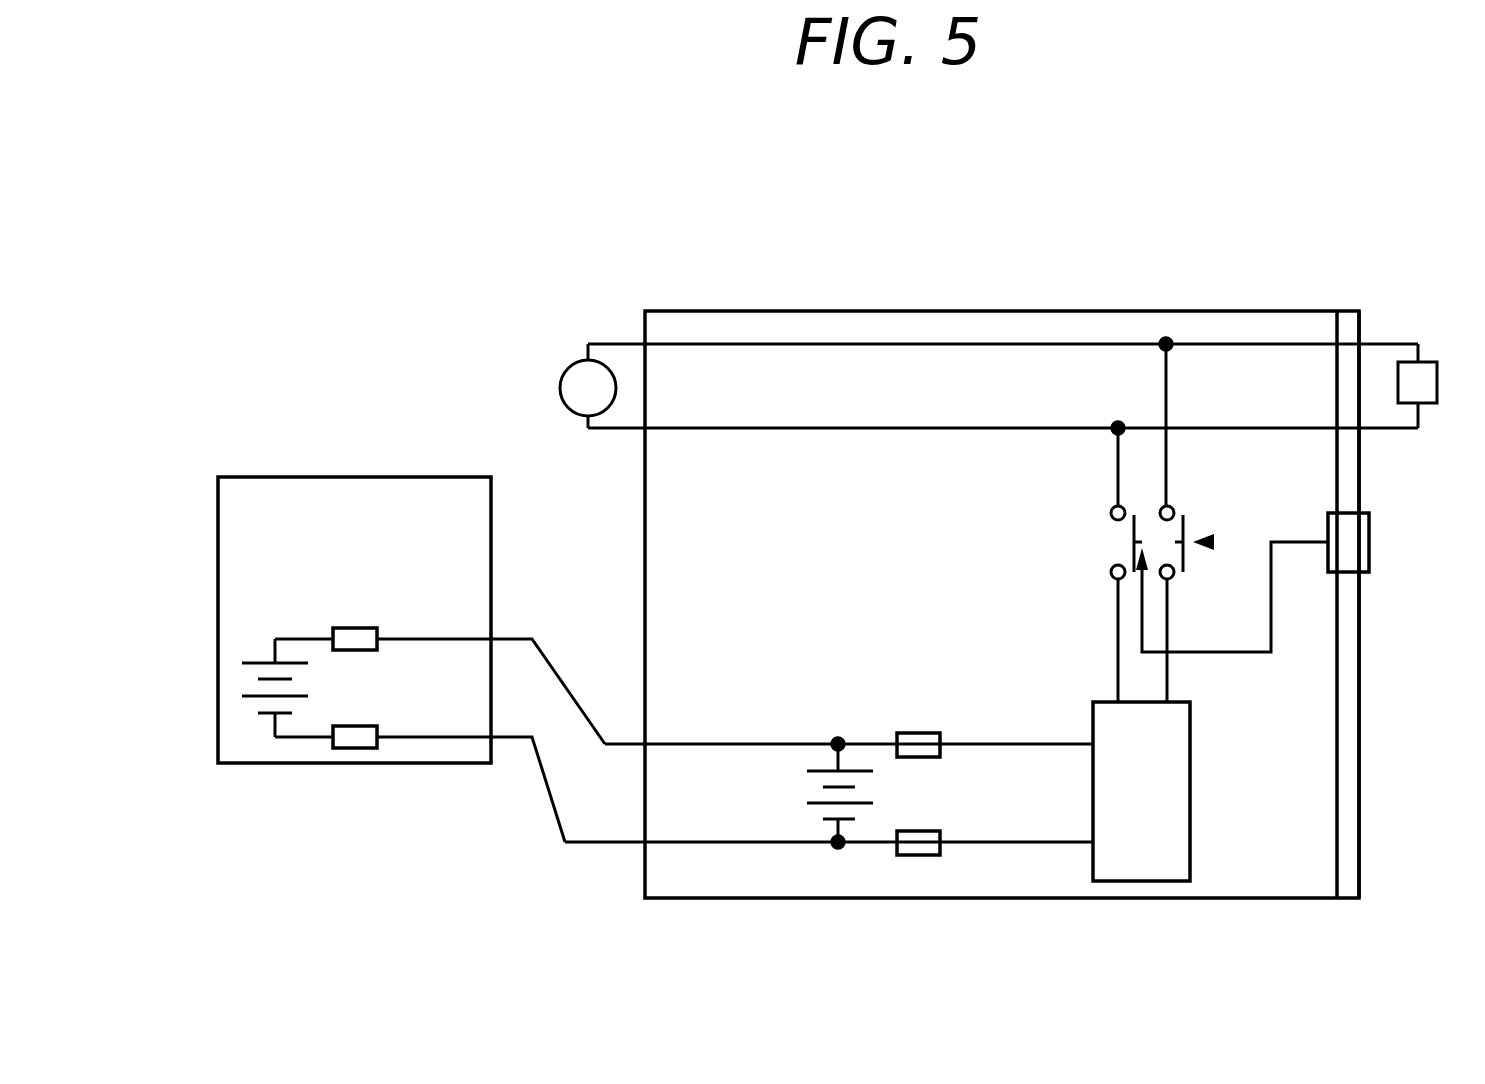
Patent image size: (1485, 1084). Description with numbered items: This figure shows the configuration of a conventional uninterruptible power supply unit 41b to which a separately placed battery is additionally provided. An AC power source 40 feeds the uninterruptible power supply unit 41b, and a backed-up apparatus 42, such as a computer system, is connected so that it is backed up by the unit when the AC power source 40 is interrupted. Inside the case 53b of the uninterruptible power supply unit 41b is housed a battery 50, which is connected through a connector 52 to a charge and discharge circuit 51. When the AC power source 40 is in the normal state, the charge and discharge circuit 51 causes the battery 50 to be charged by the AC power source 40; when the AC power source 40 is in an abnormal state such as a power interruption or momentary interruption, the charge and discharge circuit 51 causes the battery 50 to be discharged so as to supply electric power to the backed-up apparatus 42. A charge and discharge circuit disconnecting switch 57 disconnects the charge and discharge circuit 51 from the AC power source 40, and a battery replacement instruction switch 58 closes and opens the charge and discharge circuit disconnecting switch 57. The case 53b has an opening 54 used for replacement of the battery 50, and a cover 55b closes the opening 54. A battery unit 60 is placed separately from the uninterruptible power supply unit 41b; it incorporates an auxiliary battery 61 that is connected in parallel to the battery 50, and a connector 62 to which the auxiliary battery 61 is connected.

The AC power source 40 is at (572, 366).
The uninterruptible power supply unit 41b is at (877, 253).
The backed-up apparatus 42 is at (1431, 361).
The battery 50 is at (820, 772).
The charge and discharge circuit 51 is at (1192, 787).
The connector 52 is at (920, 752).
The case 53b is at (998, 310).
The opening 54 is at (1339, 310).
The cover 55b is at (1362, 675).
The charge and discharge circuit disconnecting switch 57 is at (1131, 538).
The battery replacement instruction switch 58 is at (1372, 541).
The battery unit 60 is at (357, 476).
The auxiliary battery 61 is at (255, 661).
The connector 62 is at (355, 645).